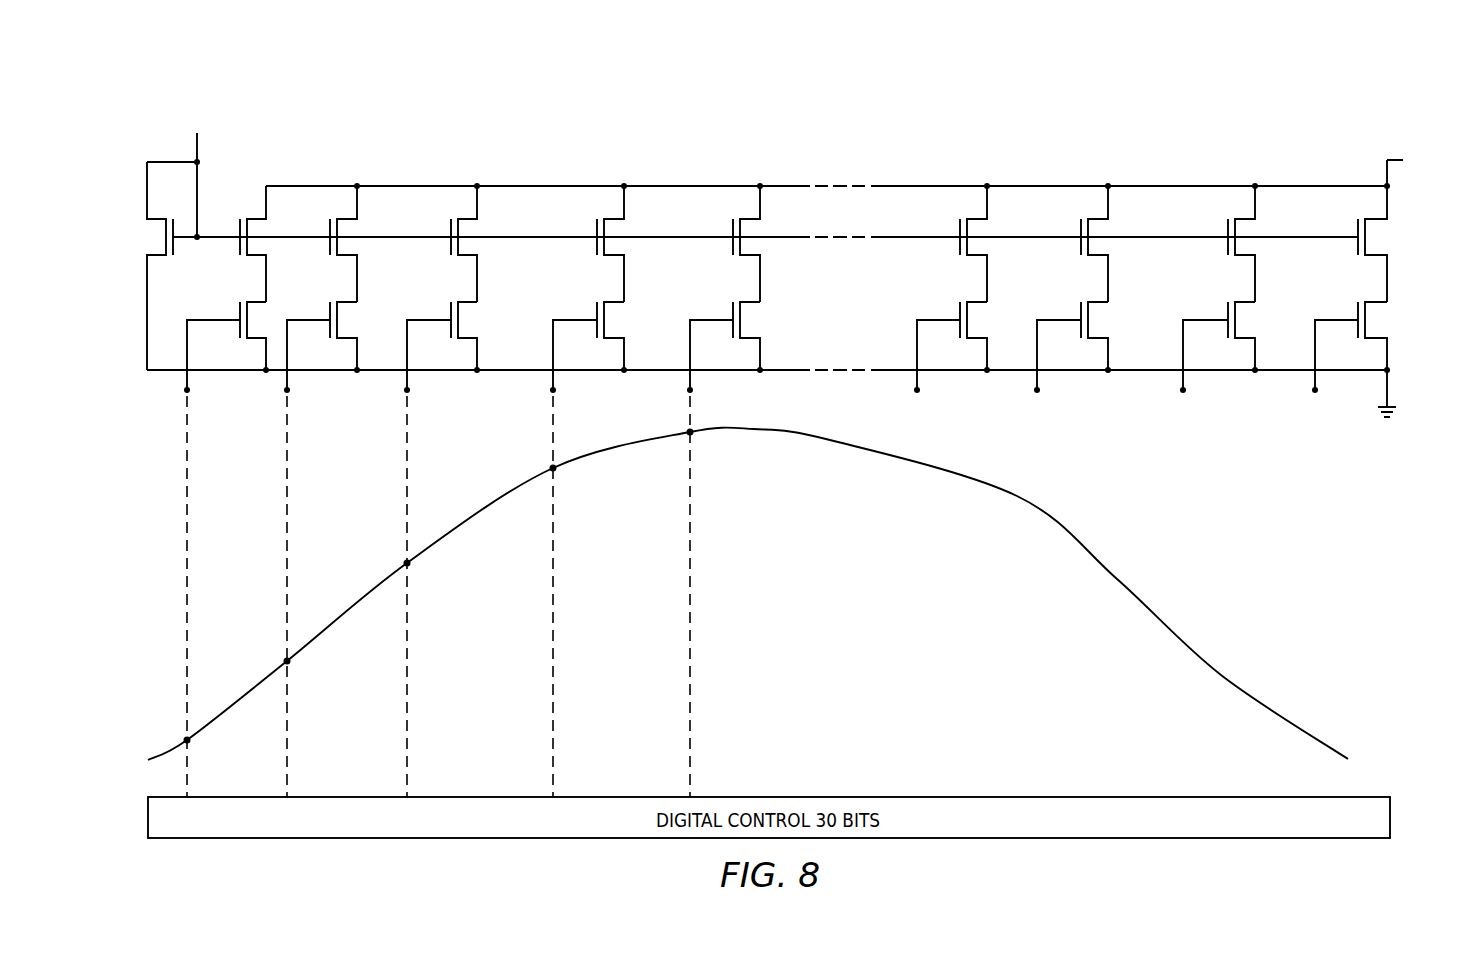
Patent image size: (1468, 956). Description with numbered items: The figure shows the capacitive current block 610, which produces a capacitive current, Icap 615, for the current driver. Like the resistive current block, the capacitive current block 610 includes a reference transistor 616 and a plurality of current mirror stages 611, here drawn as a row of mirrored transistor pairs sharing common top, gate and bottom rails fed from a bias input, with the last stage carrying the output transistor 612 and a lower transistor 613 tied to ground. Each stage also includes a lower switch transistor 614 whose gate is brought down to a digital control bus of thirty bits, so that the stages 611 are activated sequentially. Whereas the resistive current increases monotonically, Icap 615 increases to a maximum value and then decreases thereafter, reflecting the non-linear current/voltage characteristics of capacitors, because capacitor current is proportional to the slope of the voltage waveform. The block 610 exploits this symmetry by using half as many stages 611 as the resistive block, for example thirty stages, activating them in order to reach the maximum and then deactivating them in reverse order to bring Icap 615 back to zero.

The capacitive current block 610 is at (497, 112).
The current mirror stages 611 is at (355, 184).
The output current source transistor 612 is at (1390, 235).
The output switch transistor 613 is at (1390, 323).
The switch transistor 614 is at (212, 318).
The capacitive current Icap 615 is at (1018, 497).
The reference transistor 616 is at (160, 217).